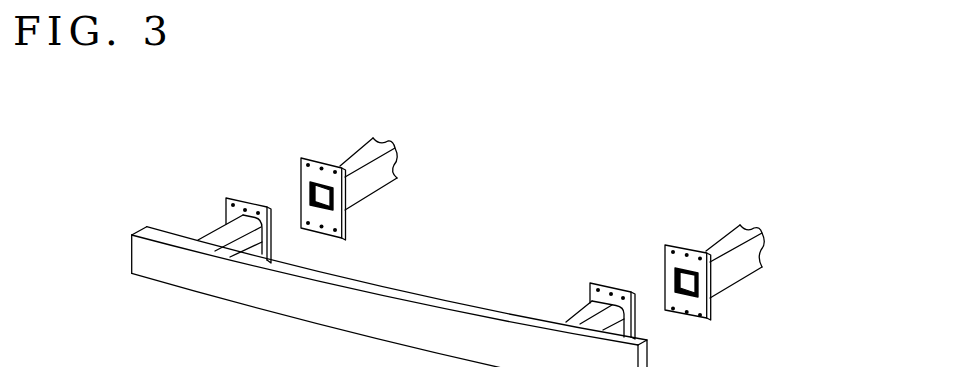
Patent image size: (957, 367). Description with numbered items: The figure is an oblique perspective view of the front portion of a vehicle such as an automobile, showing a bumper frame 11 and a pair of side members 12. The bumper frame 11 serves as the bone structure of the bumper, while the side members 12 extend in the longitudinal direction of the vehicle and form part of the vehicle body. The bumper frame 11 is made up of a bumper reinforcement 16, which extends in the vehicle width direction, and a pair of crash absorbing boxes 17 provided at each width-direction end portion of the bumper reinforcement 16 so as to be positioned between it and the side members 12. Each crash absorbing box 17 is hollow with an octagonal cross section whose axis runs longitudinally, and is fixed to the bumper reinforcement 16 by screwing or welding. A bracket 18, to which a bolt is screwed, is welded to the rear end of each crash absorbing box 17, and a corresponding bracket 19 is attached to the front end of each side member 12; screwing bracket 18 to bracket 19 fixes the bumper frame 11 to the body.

The bumper frame 11 is at (410, 273).
The side member 12 is at (368, 189).
The bumper reinforcement 16 is at (433, 328).
The crash absorbing box 17 is at (220, 230).
The bracket 18 is at (233, 198).
The bracket 19 is at (313, 158).